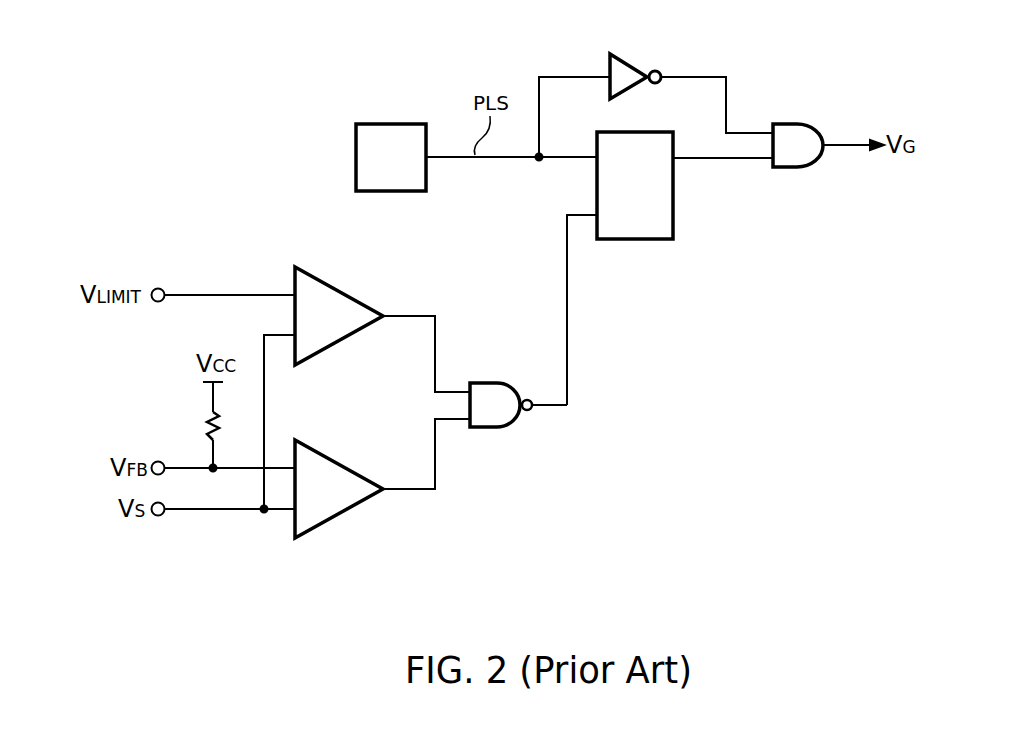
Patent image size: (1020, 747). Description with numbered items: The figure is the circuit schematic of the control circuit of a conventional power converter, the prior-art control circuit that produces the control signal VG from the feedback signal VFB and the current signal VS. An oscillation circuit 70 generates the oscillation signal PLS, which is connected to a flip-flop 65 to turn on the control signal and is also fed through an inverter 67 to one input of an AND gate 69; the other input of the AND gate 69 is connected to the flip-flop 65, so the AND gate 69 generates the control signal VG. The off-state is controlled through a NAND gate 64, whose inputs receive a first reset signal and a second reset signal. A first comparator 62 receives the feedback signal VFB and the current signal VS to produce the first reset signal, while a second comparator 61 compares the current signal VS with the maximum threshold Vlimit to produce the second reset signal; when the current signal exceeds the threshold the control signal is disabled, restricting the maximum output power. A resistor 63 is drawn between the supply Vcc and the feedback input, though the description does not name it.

The second comparator 61 is at (340, 286).
The first comparator 62 is at (336, 522).
The pull-up resistor 63 is at (198, 428).
The NAND gate 64 is at (487, 381).
The flip-flop 65 is at (676, 215).
The inverter 67 is at (628, 62).
The AND gate 69 is at (792, 120).
The oscillation circuit 70 is at (386, 122).